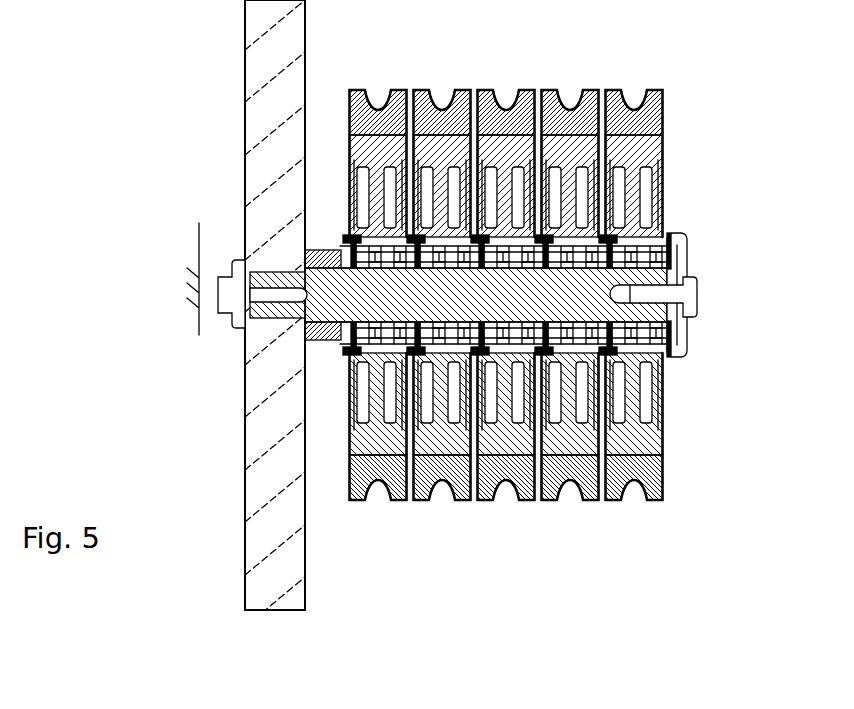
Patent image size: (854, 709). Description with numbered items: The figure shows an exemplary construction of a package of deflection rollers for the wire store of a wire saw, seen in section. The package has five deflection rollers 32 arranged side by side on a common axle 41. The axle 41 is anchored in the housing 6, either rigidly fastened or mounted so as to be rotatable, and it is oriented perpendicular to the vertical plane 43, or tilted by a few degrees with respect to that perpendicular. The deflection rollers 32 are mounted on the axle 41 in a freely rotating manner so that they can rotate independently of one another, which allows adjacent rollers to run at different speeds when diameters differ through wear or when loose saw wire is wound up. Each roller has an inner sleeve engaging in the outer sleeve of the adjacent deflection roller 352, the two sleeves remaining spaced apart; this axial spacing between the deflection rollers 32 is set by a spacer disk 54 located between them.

The housing 6 is at (262, 92).
The vertical plane 43 is at (199, 252).
The deflection roller 32 is at (382, 89).
The adjacent deflection roller 352 is at (450, 89).
The spacer disk 54 is at (477, 325).
The axle 41 is at (648, 312).